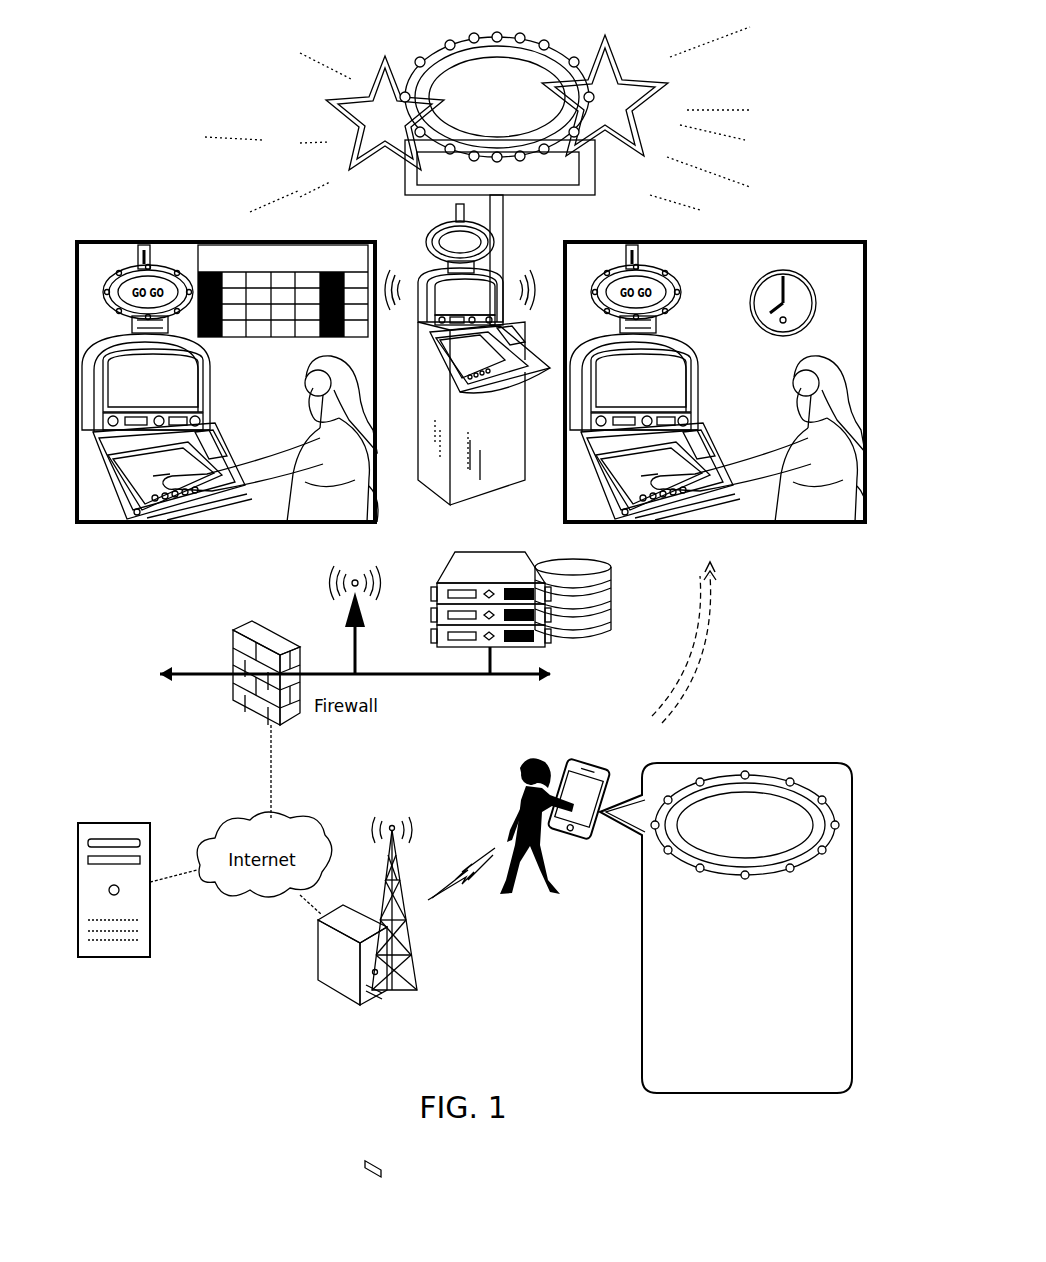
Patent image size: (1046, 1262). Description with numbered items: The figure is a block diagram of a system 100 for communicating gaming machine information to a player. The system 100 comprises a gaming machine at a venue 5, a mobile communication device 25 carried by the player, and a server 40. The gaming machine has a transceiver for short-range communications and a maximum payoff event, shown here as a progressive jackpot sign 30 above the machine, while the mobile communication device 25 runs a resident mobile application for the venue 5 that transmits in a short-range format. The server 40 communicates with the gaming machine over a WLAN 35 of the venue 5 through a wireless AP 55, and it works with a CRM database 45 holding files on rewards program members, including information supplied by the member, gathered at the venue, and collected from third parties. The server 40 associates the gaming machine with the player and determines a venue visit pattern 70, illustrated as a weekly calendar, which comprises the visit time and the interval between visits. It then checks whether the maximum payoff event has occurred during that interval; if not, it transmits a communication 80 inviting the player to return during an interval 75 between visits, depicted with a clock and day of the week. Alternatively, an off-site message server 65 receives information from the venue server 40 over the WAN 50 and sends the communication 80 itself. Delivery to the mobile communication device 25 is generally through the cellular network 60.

The system 100 is at (817, 142).
The venue 5 is at (146, 636).
The mobile communication device 25 is at (580, 758).
The progressive jackpot sign 30 is at (477, 176).
The WLAN 35 is at (117, 580).
The server 40 is at (492, 560).
The CRM database 45 is at (565, 562).
The WAN 50 is at (121, 728).
The wireless AP 55 is at (368, 616).
The cellular network 60 is at (390, 1013).
The message server 65 is at (140, 823).
The venue visit pattern 70 is at (276, 246).
The interval between visits 75 is at (750, 260).
The communication 80 is at (706, 762).